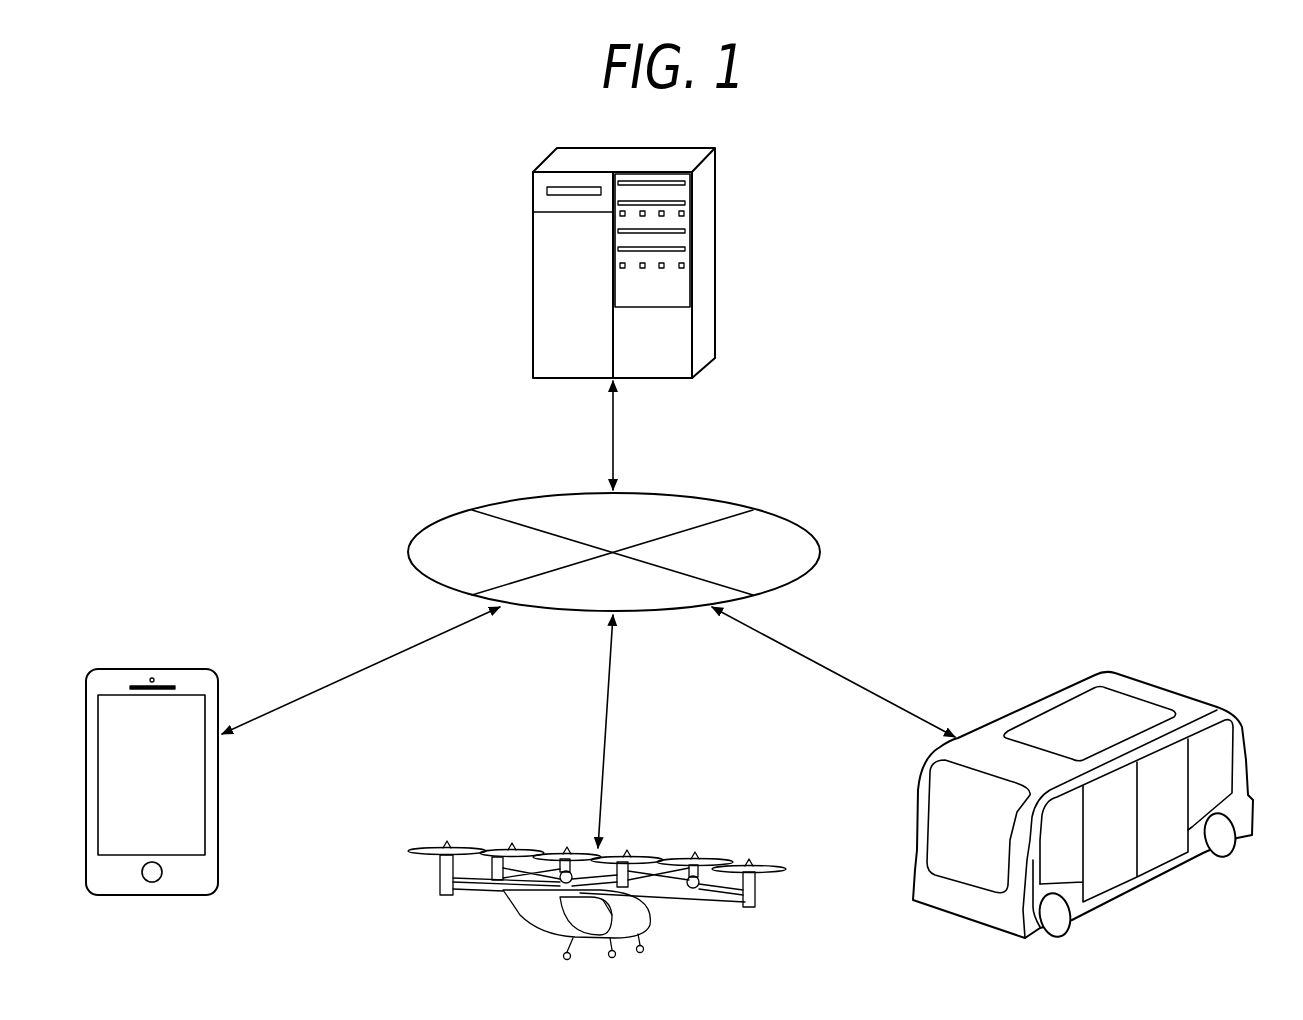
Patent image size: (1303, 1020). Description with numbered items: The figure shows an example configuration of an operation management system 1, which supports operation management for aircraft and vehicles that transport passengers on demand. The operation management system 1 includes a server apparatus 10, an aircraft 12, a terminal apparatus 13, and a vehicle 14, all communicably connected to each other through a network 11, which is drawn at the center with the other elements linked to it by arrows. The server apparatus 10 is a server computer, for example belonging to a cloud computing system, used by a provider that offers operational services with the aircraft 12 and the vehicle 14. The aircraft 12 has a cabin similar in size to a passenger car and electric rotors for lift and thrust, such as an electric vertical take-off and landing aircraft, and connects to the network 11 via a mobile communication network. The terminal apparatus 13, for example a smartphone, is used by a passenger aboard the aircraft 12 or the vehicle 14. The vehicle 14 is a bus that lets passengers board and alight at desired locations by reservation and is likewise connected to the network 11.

The operation management system 1 is at (848, 362).
The server apparatus 10 is at (716, 262).
The network 11 is at (795, 523).
The aircraft 12 is at (715, 860).
The terminal apparatus 13 is at (152, 669).
The vehicle 14 is at (1118, 672).